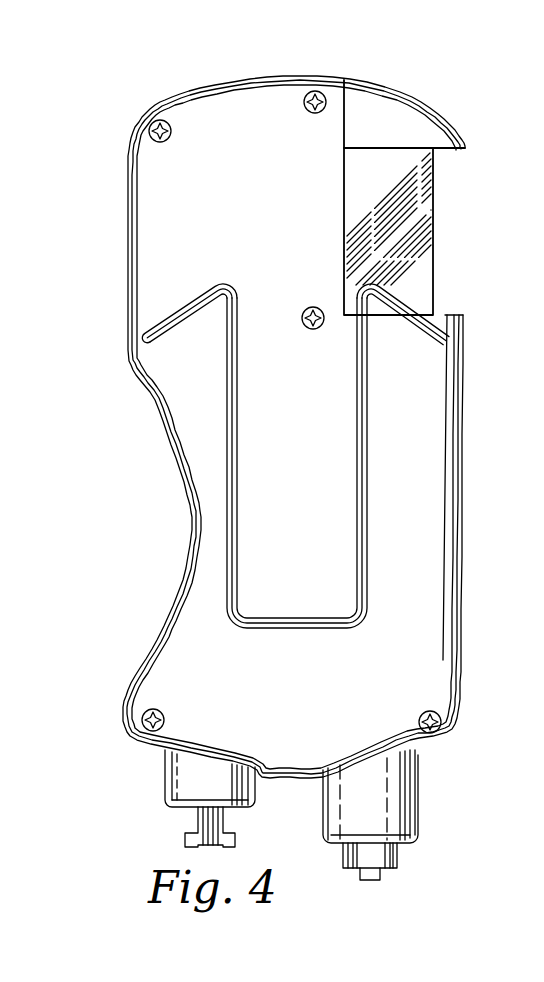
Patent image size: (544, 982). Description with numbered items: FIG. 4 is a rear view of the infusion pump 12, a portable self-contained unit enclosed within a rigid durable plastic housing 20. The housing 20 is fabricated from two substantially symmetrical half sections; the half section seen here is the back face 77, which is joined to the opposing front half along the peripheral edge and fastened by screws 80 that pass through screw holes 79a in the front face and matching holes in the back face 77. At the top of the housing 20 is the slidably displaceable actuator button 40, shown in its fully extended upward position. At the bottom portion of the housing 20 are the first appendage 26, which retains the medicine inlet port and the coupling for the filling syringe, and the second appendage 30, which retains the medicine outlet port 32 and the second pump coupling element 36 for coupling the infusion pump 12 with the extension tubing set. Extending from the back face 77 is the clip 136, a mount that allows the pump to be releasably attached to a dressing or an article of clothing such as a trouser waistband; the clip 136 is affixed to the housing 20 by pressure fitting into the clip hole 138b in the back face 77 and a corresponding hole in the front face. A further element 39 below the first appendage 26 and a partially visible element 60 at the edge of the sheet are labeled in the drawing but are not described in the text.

The infusion pump 12 is at (100, 468).
The housing 20 is at (203, 90).
The first appendage 26 is at (163, 782).
The second appendage 30 is at (402, 802).
The medicine outlet port 32 is at (382, 877).
The second pump coupling element 36 is at (398, 858).
The connector pin 39 is at (183, 820).
The actuator button 40 is at (445, 107).
The housing portion 60 is at (9, 104).
The back face 77 is at (420, 620).
The screw holes 79a is at (148, 140).
The screws 80 is at (157, 121).
The clip 136 is at (368, 452).
The clip hole 138b is at (457, 336).